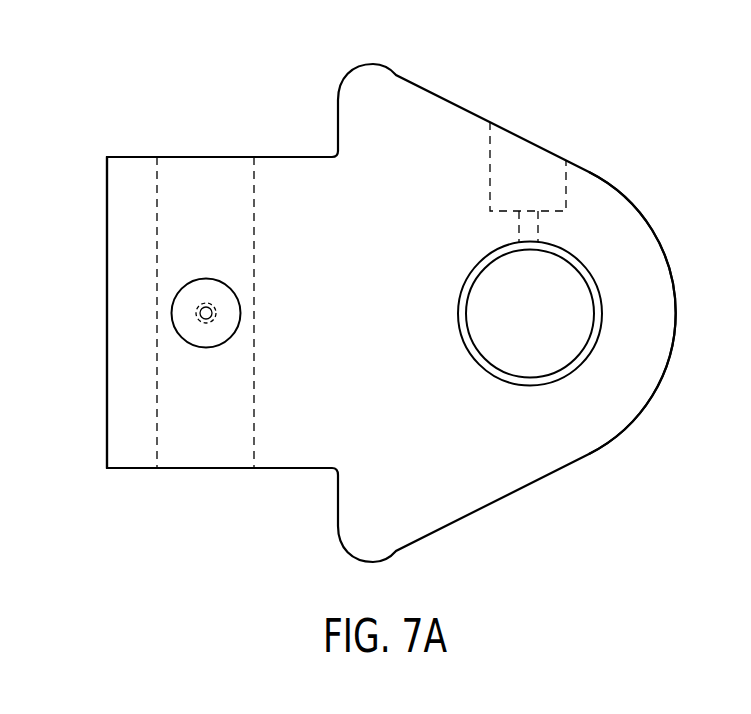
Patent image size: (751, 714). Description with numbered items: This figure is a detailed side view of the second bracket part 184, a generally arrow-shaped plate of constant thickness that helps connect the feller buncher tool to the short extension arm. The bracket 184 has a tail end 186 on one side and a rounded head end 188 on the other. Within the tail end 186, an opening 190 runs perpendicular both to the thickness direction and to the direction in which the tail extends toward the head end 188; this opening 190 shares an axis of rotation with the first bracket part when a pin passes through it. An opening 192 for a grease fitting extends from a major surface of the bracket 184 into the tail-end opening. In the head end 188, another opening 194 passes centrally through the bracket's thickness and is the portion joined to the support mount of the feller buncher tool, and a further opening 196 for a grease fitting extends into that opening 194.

The second bracket part 184 is at (565, 112).
The tail end 186 is at (117, 146).
The head end 188 is at (672, 424).
The opening 190 is at (158, 180).
The opening for a grease fitting 192 is at (234, 288).
The opening 194 is at (577, 267).
The opening for a grease fitting 196 is at (505, 210).